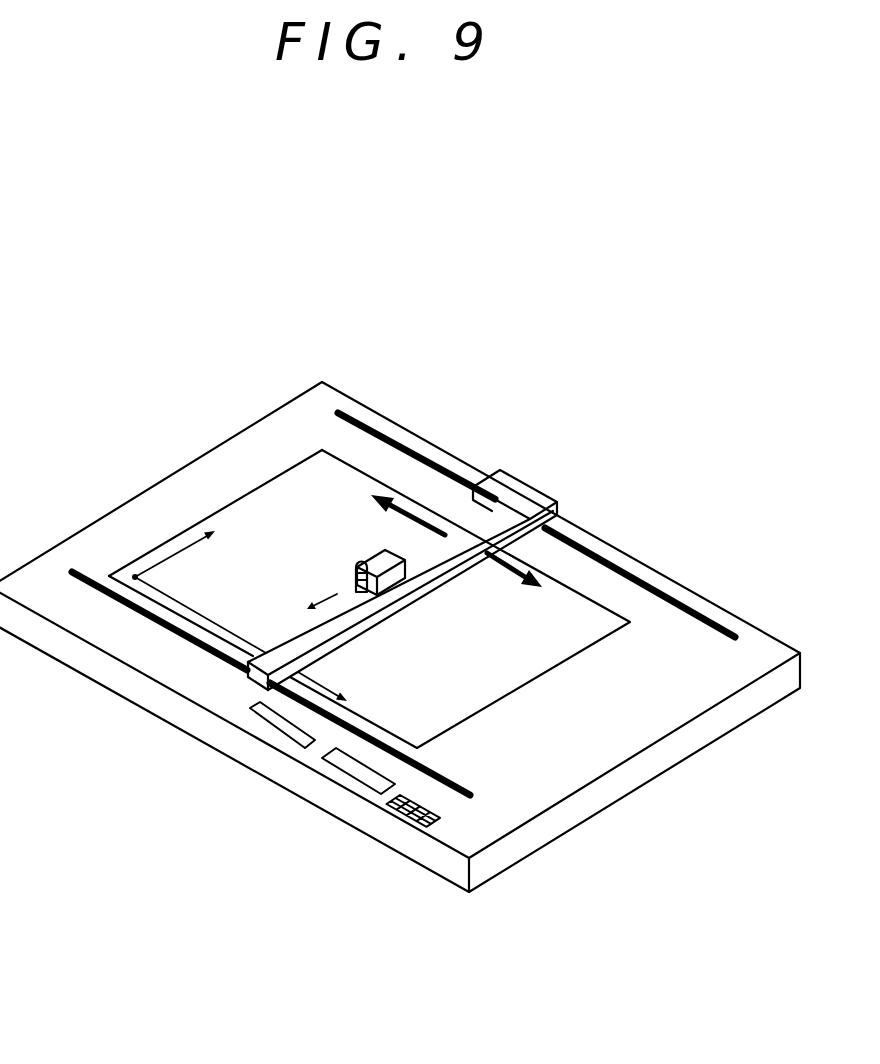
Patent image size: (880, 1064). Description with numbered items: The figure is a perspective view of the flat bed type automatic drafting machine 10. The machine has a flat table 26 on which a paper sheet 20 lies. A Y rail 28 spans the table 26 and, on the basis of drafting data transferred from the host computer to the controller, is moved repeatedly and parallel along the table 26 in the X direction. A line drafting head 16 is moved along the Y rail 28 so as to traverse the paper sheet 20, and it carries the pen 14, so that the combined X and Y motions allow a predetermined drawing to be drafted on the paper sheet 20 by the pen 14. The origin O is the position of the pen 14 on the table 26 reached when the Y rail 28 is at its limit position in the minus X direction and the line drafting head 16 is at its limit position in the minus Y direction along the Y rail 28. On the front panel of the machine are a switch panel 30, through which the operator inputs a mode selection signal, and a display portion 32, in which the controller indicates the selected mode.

The digitizer 10 is at (132, 577).
The pen 14 is at (355, 563).
The line drafting head 16 is at (387, 556).
The paper sheet 20 is at (462, 702).
The table 26 is at (641, 721).
The Y rail 28 is at (473, 537).
The switch panel 30 is at (408, 820).
The display portion 32 is at (348, 759).